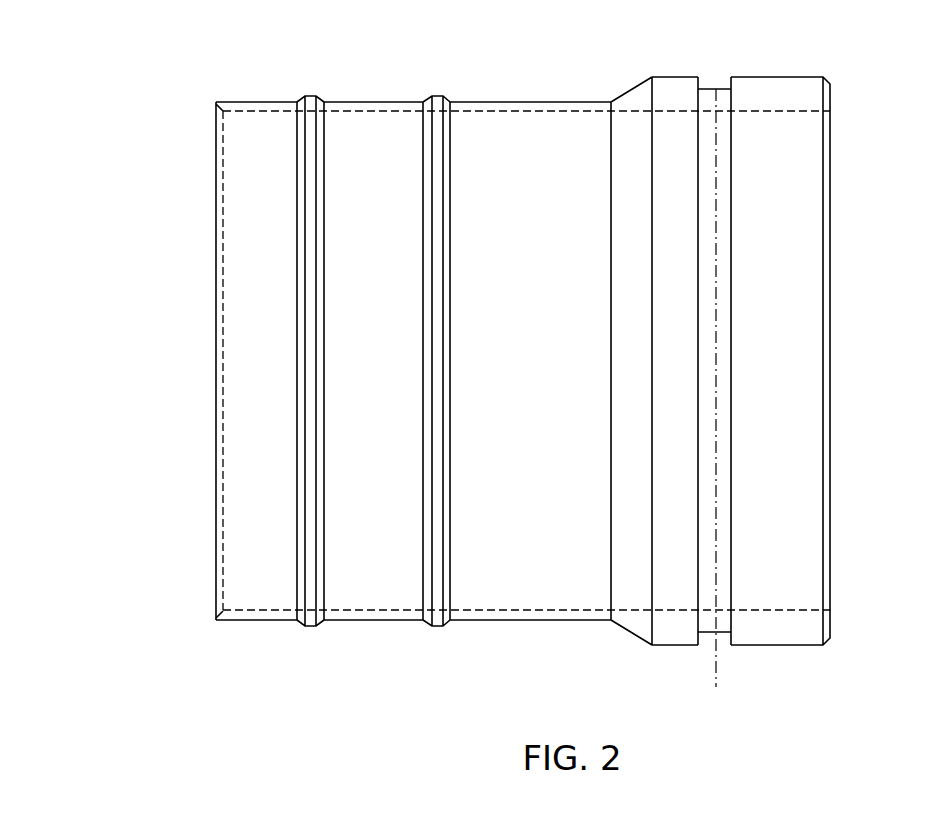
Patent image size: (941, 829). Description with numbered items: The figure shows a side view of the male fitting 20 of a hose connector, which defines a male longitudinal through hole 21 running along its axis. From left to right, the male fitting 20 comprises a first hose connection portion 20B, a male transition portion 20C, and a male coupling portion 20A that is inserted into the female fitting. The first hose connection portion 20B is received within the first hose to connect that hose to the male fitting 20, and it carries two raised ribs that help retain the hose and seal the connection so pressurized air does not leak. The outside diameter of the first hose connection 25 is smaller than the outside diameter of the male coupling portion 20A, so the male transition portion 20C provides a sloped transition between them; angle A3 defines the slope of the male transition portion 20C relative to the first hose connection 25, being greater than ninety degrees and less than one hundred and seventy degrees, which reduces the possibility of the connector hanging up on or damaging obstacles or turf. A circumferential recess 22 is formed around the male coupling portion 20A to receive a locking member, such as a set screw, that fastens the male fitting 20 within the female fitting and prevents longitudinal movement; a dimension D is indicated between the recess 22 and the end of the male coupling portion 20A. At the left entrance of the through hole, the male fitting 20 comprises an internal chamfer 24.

The male fitting 20 is at (489, 355).
The male coupling portion 20A is at (784, 355).
The first hose connection portion 20B is at (499, 354).
The male transition portion 20C is at (608, 339).
The male longitudinal through hole 21 is at (852, 402).
The recess 22 is at (729, 202).
The internal chamfer 24 is at (216, 122).
The first hose connection 25 is at (534, 527).
The angle A3 is at (638, 83).
The distance D is at (716, 507).